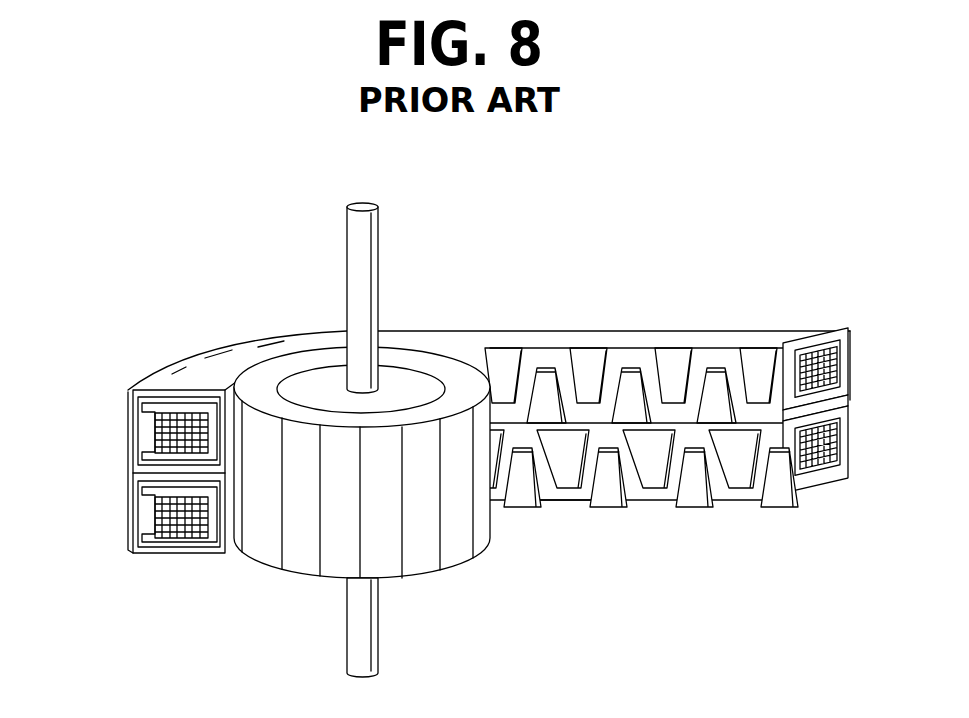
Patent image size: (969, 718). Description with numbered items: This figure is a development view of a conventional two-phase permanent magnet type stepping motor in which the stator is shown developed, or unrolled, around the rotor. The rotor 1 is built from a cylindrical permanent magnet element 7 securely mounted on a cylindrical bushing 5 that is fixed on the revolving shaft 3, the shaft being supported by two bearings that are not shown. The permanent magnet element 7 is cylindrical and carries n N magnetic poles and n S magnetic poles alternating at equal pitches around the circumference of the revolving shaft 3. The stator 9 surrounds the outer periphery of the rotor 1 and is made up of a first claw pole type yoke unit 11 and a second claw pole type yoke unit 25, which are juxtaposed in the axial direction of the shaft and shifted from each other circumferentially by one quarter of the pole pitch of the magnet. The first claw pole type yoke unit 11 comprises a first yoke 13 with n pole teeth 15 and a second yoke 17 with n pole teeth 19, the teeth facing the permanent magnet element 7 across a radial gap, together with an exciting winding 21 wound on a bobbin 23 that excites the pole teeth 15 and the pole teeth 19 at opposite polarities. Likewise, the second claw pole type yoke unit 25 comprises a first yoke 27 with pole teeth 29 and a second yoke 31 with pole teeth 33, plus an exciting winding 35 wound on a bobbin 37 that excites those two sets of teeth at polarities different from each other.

The rotor 1 is at (287, 589).
The revolving shaft 3 is at (378, 247).
The cylindrical bushing 5 is at (403, 387).
The cylindrical permanent magnet element 7 is at (450, 562).
The stator 9 is at (582, 328).
The first claw pole type yoke unit 11 is at (795, 319).
The first yoke 13 is at (683, 335).
The pole teeth 15 is at (675, 387).
The second yoke 17 is at (790, 378).
The pole teeth 19 is at (627, 403).
The exciting winding 21 is at (152, 437).
The bobbin 23 is at (173, 407).
The second claw pole type yoke unit 25 is at (757, 518).
The first yoke 27 is at (777, 507).
The pole teeth 29 is at (571, 455).
The second yoke 31 is at (662, 498).
The pole teeth 33 is at (600, 507).
The exciting winding 35 is at (155, 513).
The bobbin 37 is at (147, 545).